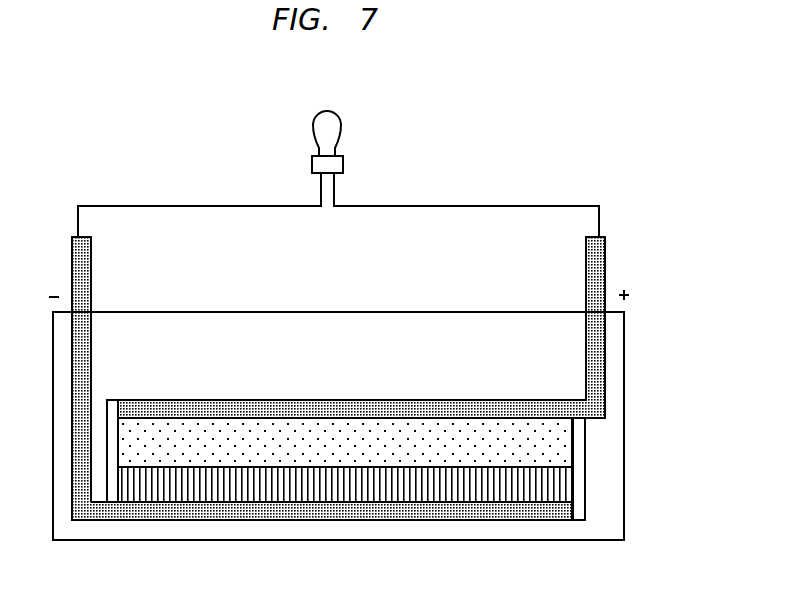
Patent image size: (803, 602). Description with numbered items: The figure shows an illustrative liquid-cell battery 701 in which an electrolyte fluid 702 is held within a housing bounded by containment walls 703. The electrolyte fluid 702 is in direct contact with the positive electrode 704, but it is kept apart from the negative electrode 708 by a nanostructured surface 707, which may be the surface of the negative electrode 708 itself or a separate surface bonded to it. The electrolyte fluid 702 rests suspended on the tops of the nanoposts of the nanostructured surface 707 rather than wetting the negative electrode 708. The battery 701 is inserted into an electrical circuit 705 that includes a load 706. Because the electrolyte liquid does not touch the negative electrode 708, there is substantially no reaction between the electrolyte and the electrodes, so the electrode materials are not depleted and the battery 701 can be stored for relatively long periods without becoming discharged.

The battery 701 is at (626, 380).
The electrolyte fluid 702 is at (463, 422).
The containment walls 703 is at (112, 398).
The positive electrode 704 is at (607, 263).
The electrical circuit 705 is at (494, 206).
The load 706 is at (340, 127).
The nanostructured surface 707 is at (340, 497).
The negative electrode 708 is at (93, 263).